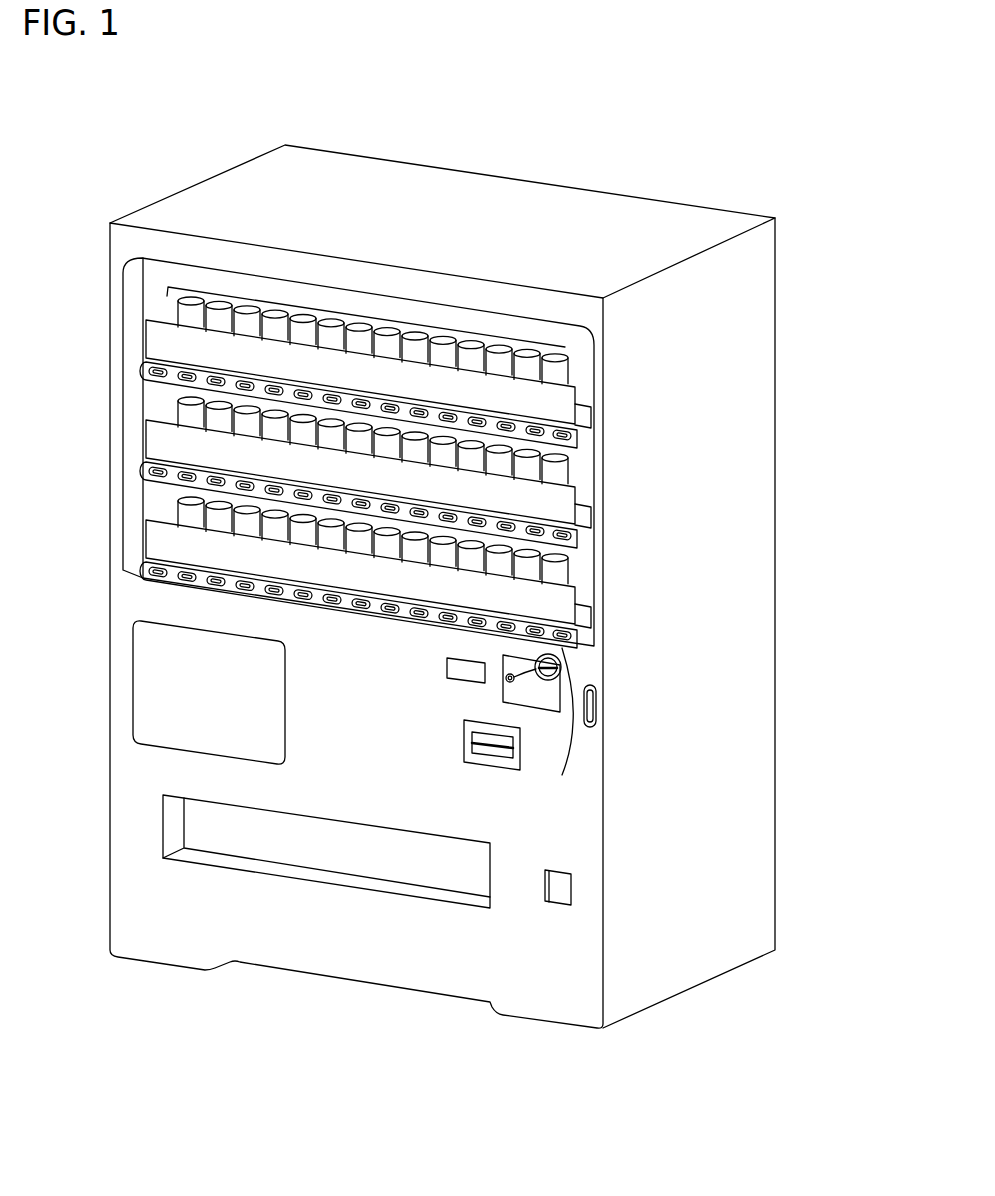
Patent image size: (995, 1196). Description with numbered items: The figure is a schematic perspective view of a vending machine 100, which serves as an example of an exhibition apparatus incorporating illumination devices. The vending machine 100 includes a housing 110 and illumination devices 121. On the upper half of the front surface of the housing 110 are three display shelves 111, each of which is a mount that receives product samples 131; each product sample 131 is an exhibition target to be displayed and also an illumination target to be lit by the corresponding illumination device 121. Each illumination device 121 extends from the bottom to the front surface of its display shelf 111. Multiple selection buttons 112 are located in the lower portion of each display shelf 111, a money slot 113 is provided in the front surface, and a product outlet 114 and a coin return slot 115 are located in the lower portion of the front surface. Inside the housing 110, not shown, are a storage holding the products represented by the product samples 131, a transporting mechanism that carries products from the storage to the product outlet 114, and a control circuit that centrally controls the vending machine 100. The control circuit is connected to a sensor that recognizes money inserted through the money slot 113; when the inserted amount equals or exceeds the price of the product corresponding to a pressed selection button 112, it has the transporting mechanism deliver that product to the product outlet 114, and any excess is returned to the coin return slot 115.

The vending machine 100 is at (776, 1012).
The housing 110 is at (758, 865).
The display shelf 111 is at (591, 412).
The selection button 112 is at (586, 437).
The money slot 113 is at (577, 728).
The product outlet 114 is at (200, 835).
The coin return slot 115 is at (560, 892).
The illumination device 121 is at (160, 547).
The product sample 131 is at (370, 312).